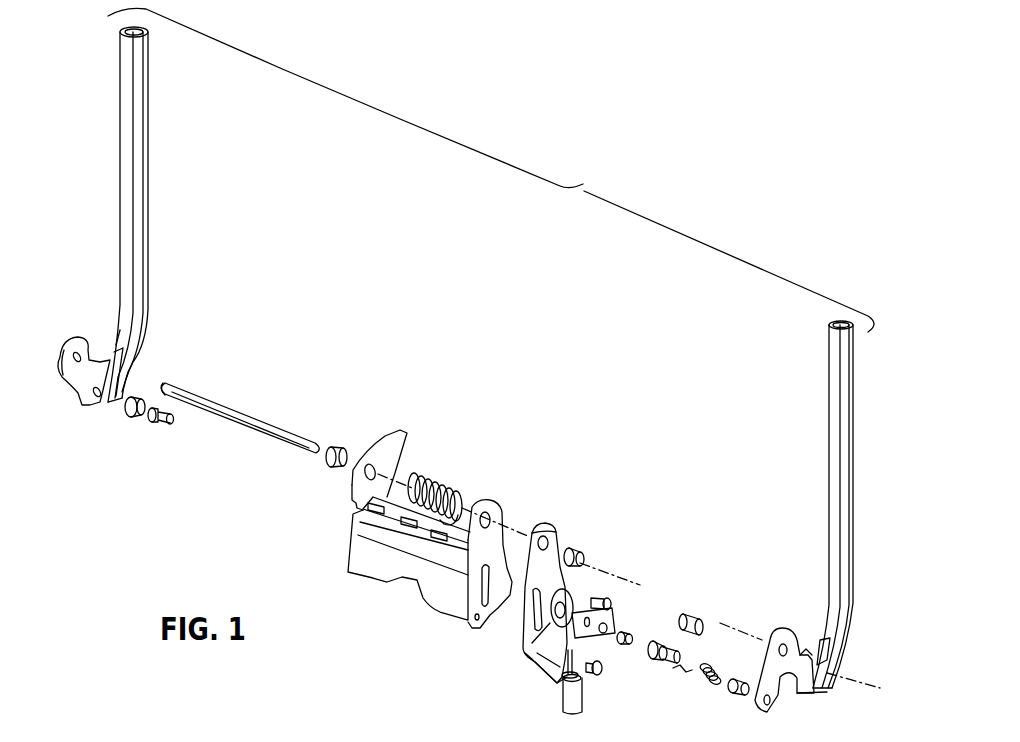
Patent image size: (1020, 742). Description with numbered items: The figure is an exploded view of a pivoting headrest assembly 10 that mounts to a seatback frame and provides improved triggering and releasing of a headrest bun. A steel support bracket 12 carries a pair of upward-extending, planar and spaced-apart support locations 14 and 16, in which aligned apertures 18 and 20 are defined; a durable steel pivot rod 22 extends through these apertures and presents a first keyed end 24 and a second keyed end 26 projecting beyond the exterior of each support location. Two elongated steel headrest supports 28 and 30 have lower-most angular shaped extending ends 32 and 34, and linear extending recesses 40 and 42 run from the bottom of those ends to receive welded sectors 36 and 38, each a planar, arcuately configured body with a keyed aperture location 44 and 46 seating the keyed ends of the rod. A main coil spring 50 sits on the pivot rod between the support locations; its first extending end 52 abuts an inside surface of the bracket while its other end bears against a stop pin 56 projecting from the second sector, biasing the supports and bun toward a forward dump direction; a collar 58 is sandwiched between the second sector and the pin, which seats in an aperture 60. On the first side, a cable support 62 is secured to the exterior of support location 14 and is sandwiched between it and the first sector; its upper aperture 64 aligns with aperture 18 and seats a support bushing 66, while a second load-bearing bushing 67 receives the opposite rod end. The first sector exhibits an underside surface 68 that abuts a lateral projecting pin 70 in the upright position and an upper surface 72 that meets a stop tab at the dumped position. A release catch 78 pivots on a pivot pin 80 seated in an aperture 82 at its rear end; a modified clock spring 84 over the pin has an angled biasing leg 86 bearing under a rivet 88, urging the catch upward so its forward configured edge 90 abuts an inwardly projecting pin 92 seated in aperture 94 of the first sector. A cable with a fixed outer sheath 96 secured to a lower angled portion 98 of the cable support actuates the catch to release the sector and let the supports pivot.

The pivoting headrest assembly 10 is at (583, 192).
The support bracket 12 is at (360, 575).
The first bracket support location 14 is at (530, 517).
The second bracket support location 16 is at (377, 450).
The aperture 18 is at (503, 505).
The aperture 20 is at (352, 490).
The pivot rod 22 is at (237, 412).
The first keyed end 24 is at (332, 445).
The second keyed end 26 is at (165, 383).
The headrest support 28 is at (829, 465).
The headrest support 30 is at (128, 143).
The angular shaped extending end 32 is at (830, 670).
The angular shaped extending end 34 is at (120, 333).
The first sector 36 is at (772, 638).
The second sector 38 is at (75, 377).
The linear extending recess 40 is at (830, 655).
The linear extending recess 42 is at (127, 380).
The keyed aperture location 44 is at (782, 647).
The keyed aperture location 46 is at (62, 352).
The main coil spring 50 is at (428, 487).
The first extending end 52 is at (465, 508).
The stop pin 56 is at (160, 430).
The collar 58 is at (128, 413).
The aperture 60 is at (97, 396).
The cable support 62 is at (523, 642).
The aperture 64 is at (560, 535).
The support bushing 66 is at (580, 550).
The second support bushing 67 is at (325, 467).
The first underside surface 68 is at (798, 695).
The lateral projecting pin 70 is at (692, 618).
The second upper surface 72 is at (800, 650).
The release catch 78 is at (585, 637).
The pivot pin 80 is at (673, 645).
The aperture 82 is at (610, 612).
The modified clock spring 84 is at (702, 685).
The angled biasing leg 86 is at (677, 673).
The rivet 88 is at (620, 630).
The forward configured edge 90 is at (532, 655).
The inwardly projecting pin 92 is at (733, 697).
The aperture 94 is at (770, 703).
The fixed outer sheath 96 is at (585, 693).
The lower angled portion 98 is at (560, 688).